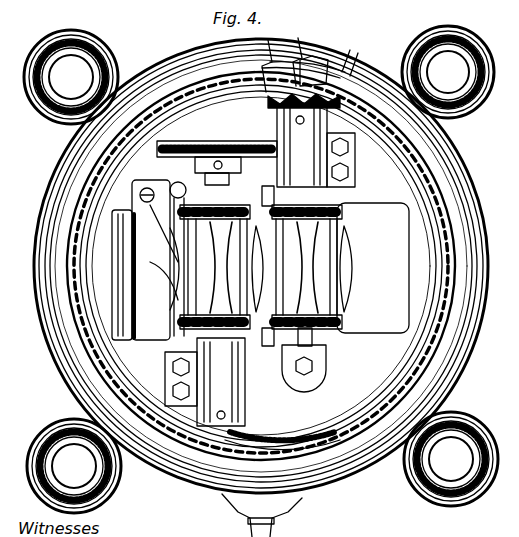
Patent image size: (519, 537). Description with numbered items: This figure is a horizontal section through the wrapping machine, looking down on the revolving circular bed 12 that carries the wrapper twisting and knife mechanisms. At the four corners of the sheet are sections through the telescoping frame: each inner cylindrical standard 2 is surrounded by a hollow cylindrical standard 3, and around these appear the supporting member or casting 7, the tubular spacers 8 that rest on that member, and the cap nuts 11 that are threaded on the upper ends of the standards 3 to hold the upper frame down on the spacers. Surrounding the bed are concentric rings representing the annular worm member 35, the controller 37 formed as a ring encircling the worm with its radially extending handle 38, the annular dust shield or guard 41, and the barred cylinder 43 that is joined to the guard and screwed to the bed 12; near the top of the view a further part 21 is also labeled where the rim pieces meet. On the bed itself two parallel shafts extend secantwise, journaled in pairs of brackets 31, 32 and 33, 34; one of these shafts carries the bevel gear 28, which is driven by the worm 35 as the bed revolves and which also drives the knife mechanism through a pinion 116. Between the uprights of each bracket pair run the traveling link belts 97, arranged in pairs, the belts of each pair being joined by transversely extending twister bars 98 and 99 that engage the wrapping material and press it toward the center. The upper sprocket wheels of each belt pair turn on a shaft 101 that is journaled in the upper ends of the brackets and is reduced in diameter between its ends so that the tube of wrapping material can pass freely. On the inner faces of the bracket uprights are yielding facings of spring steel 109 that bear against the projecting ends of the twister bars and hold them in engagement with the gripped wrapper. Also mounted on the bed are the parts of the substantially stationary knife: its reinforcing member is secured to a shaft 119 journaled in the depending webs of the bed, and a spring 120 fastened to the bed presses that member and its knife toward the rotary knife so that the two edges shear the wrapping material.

The cylindrical standards 2 is at (104, 44).
The hollow cylindrical standards 3 is at (46, 56).
The member or casting 7 is at (88, 33).
The tubular spacers 8 is at (34, 110).
The cap nuts 11 is at (108, 362).
The circular bed 12 is at (217, 138).
The hinge 21 is at (320, 96).
The bevel gear 28 is at (248, 447).
The bracket 31 is at (326, 352).
The bracket 32 is at (345, 178).
The bracket 33 is at (170, 345).
The bracket 34 is at (160, 182).
The annular worm member 35 is at (306, 68).
The controller 37 is at (340, 66).
The handle 38 is at (272, 526).
The annular shield or guard 41 is at (338, 485).
The barred cylinder 43 is at (375, 402).
The link belts 97 is at (180, 212).
The twister bars 98 is at (336, 270).
The twister bars 99 is at (254, 284).
The shaft 101 is at (214, 300).
The spring steel facings 109 is at (266, 188).
The pinion 116 is at (234, 158).
The shaft 119 is at (128, 240).
The spring 120 is at (110, 196).